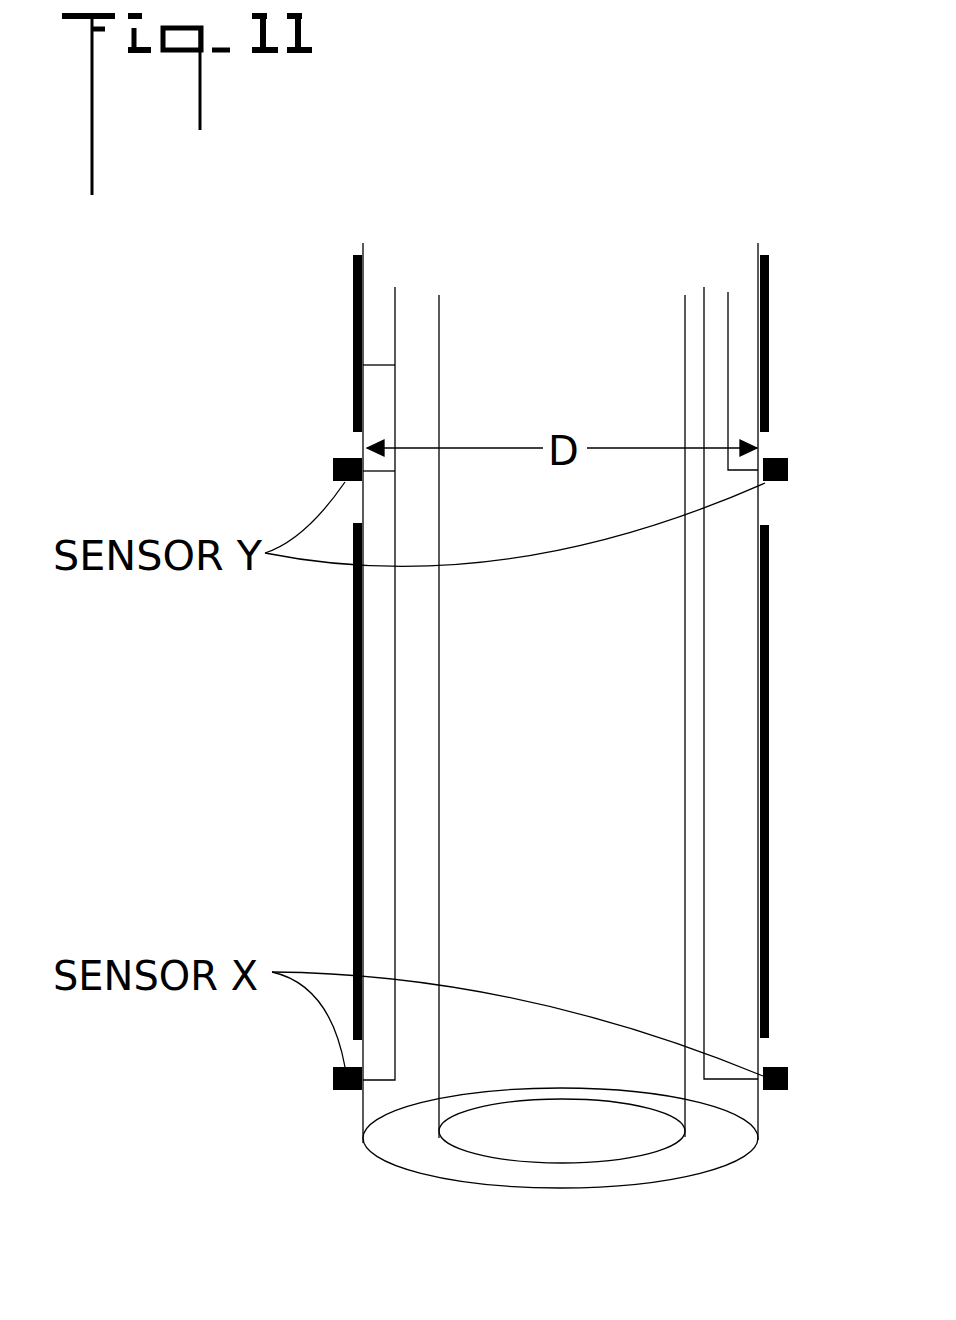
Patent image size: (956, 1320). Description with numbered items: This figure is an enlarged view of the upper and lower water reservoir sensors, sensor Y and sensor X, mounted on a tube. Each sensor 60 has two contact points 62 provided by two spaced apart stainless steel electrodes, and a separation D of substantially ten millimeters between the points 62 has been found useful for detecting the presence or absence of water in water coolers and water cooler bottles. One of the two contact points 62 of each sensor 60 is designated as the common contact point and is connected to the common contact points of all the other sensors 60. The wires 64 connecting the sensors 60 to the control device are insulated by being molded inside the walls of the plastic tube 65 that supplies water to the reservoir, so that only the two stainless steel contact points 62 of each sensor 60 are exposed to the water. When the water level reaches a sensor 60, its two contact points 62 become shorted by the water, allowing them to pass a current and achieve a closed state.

The sensor 60 is at (297, 447).
The contact point 62 is at (335, 482).
The wire 64 is at (363, 365).
The plastic tube 65 is at (410, 1133).